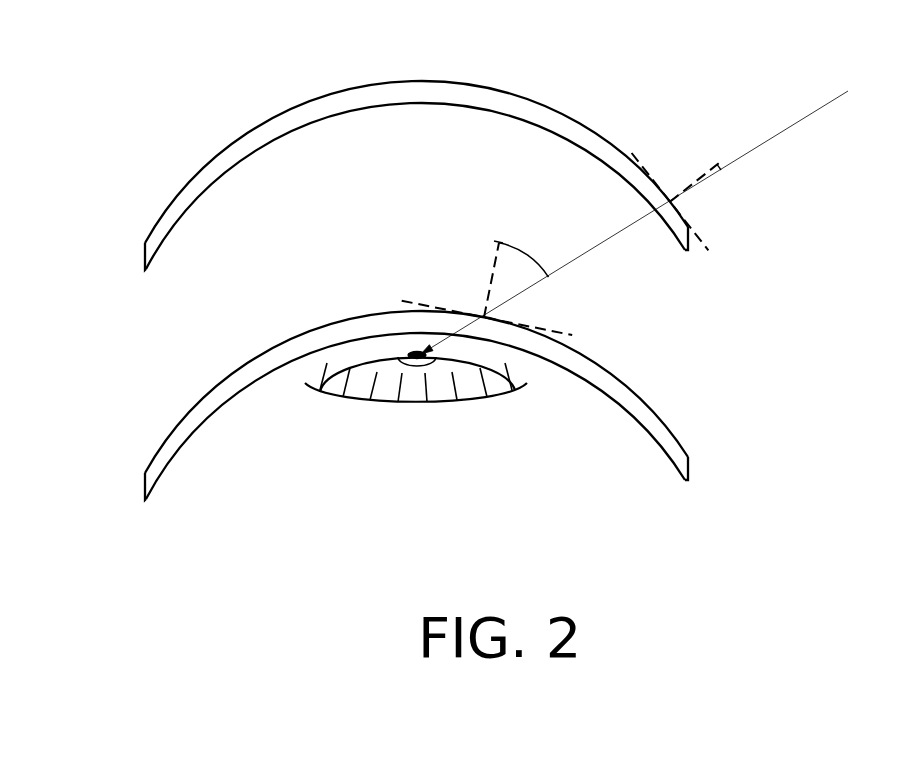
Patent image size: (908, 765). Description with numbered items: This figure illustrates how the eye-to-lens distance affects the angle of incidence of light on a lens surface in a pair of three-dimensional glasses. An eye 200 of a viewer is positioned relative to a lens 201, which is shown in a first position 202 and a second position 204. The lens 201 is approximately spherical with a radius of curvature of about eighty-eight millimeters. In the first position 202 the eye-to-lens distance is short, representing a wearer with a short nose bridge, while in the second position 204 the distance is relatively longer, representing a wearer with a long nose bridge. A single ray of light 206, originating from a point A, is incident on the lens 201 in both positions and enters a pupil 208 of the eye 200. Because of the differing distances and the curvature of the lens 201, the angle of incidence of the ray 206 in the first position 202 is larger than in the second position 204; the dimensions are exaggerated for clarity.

The eye 200 is at (412, 403).
The lens 201 is at (339, 100).
The first position 202 is at (145, 483).
The second position 204 is at (145, 253).
The ray of light 206 is at (832, 100).
The pupil 208 is at (413, 353).